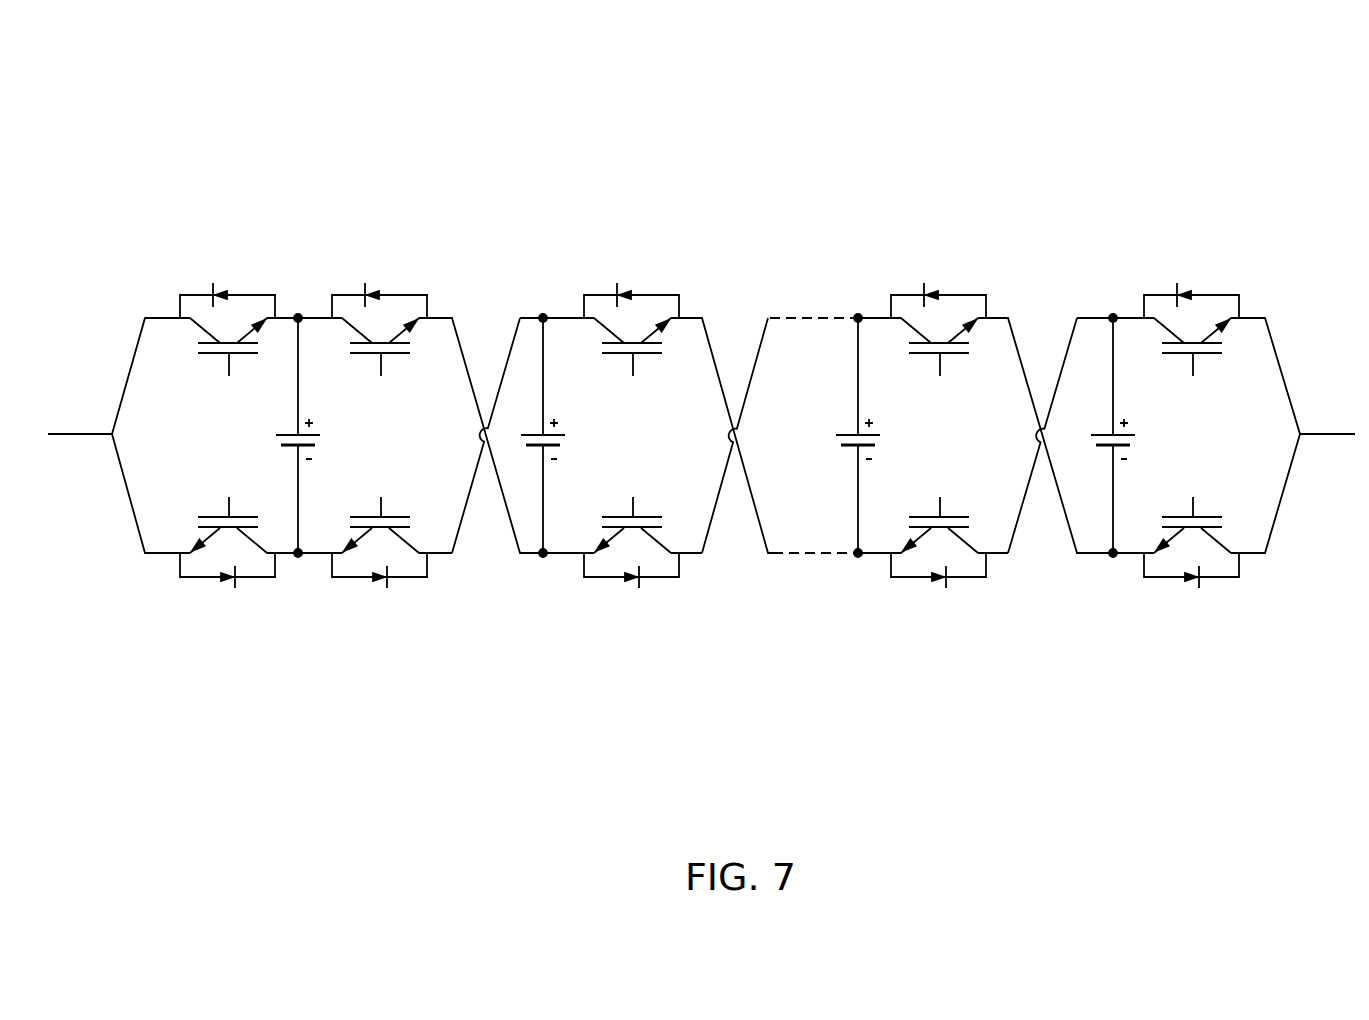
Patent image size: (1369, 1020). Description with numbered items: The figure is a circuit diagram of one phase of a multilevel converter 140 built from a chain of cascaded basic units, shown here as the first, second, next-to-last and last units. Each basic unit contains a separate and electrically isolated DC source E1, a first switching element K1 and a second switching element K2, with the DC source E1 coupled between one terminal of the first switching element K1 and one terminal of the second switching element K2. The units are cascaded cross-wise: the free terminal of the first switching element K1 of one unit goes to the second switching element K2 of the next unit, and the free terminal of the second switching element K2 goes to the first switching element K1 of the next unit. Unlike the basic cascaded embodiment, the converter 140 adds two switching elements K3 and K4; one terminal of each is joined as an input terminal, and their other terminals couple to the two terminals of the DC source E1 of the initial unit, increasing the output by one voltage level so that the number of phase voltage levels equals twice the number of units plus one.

The multilevel converter 140 is at (222, 102).
The first switching element K1 is at (379, 335).
The second switching element K2 is at (379, 536).
The switching element K3 is at (227, 335).
The switching element K4 is at (227, 536).
The separate and electrically isolated DC source E1 is at (319, 435).